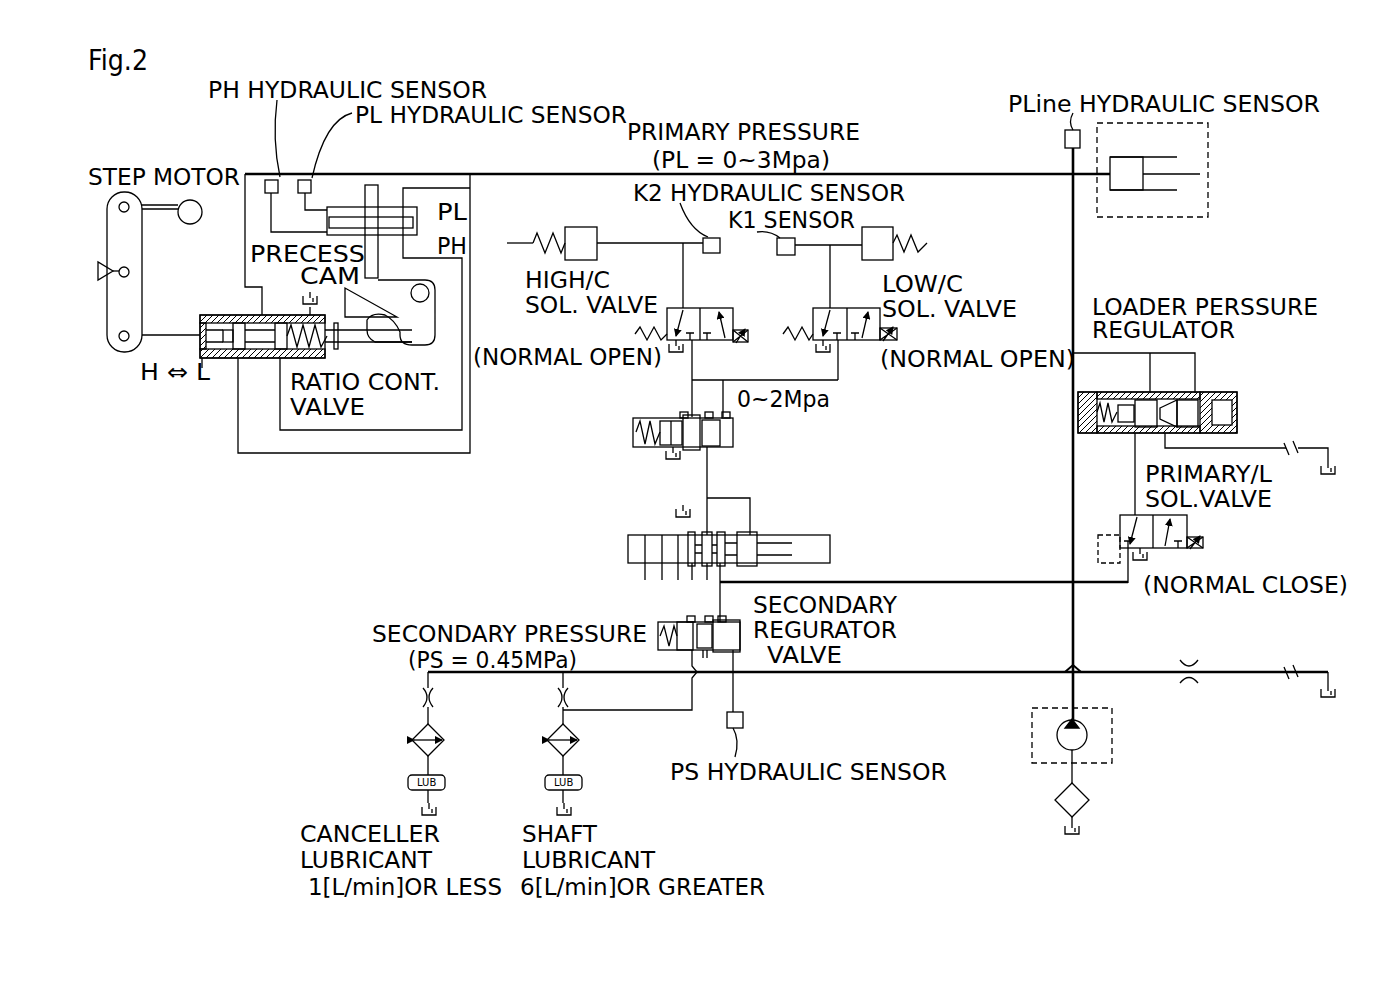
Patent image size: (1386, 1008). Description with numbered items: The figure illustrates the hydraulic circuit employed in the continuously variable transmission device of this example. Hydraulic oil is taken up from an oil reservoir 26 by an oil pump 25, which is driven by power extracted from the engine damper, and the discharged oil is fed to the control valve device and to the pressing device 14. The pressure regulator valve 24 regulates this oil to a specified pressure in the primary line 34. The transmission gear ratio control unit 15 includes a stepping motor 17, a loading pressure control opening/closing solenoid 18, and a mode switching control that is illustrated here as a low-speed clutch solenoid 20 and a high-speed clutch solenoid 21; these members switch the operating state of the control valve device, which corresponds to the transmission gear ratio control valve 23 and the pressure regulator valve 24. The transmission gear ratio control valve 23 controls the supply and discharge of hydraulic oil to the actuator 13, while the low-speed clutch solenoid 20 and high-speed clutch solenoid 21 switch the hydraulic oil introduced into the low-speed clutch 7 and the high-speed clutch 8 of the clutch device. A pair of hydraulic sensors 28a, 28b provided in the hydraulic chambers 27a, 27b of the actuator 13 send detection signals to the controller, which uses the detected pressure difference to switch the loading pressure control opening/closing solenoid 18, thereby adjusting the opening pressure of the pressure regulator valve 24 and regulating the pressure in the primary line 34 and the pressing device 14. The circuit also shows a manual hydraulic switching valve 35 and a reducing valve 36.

The low-speed clutch 7 is at (927, 243).
The high-speed clutch 8 is at (512, 245).
The actuator 13 is at (372, 185).
The pressing device 14 is at (1158, 192).
The transmission gear ratio control unit 15 is at (176, 161).
The stepping motor 17 is at (193, 225).
The loading pressure control opening/closing solenoid 18 is at (1187, 520).
The low-speed clutch solenoid 20 is at (862, 342).
The high-speed clutch solenoid 21 is at (706, 308).
The transmission gear ratio control valve 23 is at (222, 313).
The pressure regulator valve 24 is at (1222, 393).
The oil pump 25 is at (1057, 735).
The oil reservoir 26 is at (303, 297).
The hydraulic chamber 27a is at (394, 206).
The hydraulic chamber 27b is at (392, 237).
The hydraulic sensor 28a is at (305, 180).
The hydraulic sensor 28b is at (270, 180).
The primary line 34 is at (1073, 450).
The manual hydraulic switching valve 35 is at (830, 548).
The reducing valve 36 is at (717, 436).